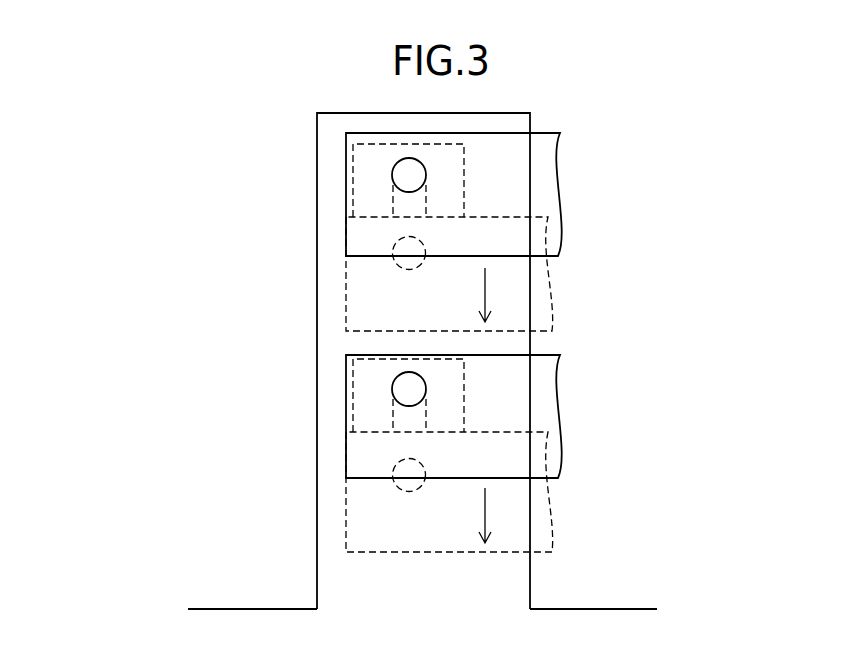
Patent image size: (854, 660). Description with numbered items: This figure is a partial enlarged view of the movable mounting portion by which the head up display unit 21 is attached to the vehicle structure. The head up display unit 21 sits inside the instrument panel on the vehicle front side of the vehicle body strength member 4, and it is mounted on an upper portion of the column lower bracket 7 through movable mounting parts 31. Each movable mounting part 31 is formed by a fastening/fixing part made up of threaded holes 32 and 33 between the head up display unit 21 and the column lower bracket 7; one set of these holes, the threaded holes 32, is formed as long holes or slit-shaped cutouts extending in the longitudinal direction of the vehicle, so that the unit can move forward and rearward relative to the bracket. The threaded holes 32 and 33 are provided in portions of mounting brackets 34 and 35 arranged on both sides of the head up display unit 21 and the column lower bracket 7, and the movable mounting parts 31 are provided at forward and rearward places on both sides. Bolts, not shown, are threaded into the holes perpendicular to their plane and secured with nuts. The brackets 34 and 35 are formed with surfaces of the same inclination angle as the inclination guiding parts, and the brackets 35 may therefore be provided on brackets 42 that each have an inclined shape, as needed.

The vehicle body strength member 4 is at (222, 609).
The column lower bracket 7 is at (342, 361).
The bracket 42 is at (317, 549).
The head up display unit 21 is at (538, 342).
The mounting bracket 34 is at (569, 165).
The movable mounting part 31 is at (263, 325).
The threaded hole 32 is at (392, 198).
The threaded hole 33 is at (392, 175).
The mounting bracket 35 is at (348, 160).